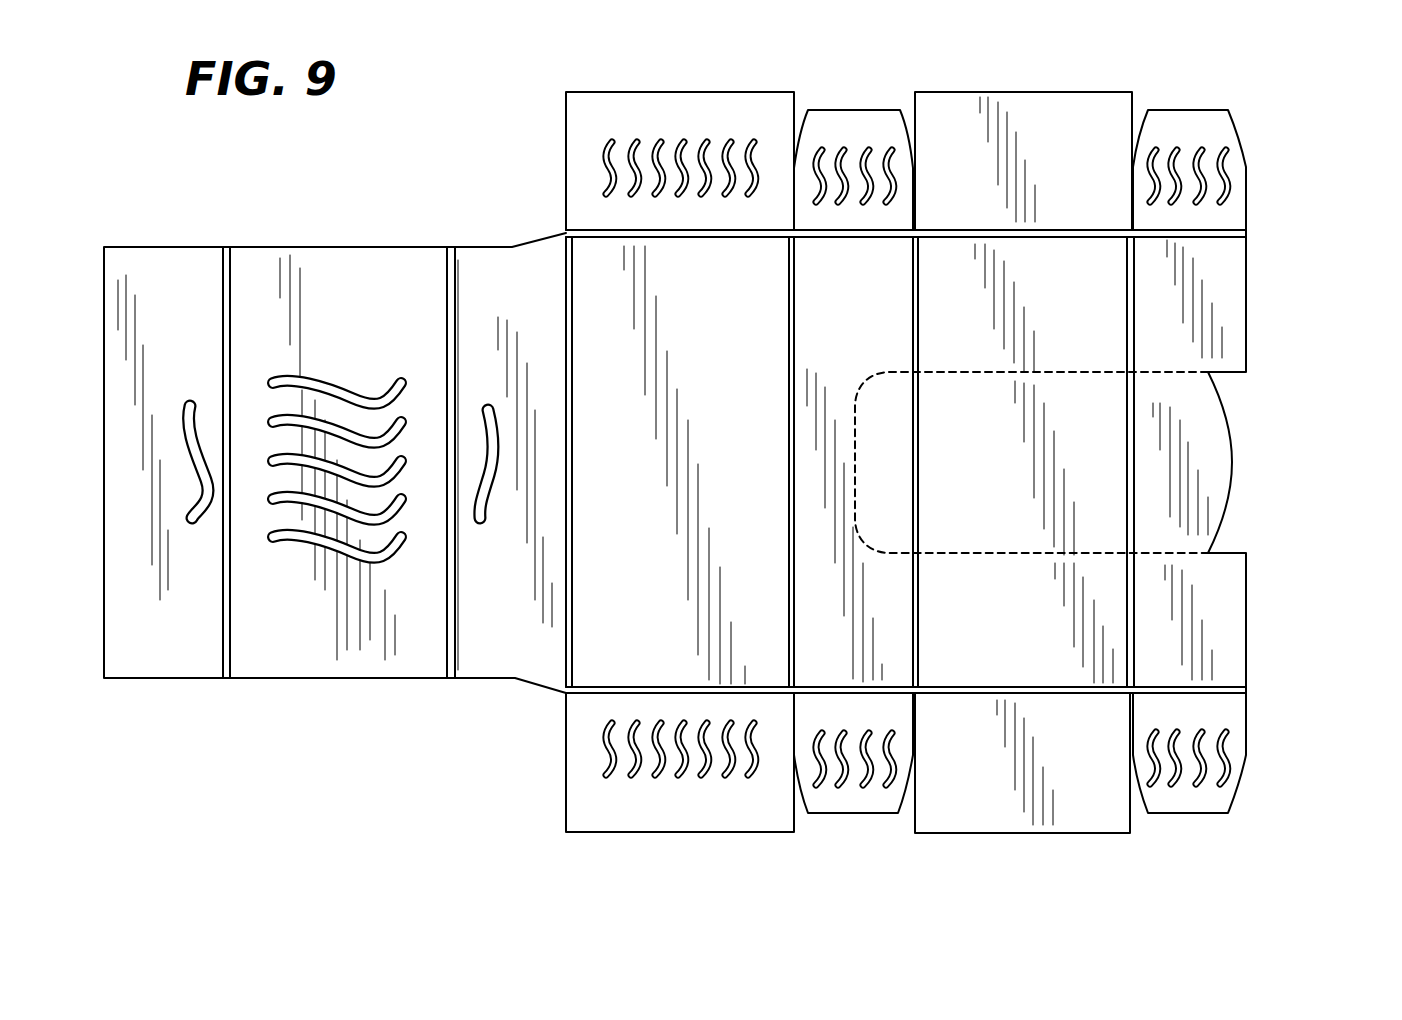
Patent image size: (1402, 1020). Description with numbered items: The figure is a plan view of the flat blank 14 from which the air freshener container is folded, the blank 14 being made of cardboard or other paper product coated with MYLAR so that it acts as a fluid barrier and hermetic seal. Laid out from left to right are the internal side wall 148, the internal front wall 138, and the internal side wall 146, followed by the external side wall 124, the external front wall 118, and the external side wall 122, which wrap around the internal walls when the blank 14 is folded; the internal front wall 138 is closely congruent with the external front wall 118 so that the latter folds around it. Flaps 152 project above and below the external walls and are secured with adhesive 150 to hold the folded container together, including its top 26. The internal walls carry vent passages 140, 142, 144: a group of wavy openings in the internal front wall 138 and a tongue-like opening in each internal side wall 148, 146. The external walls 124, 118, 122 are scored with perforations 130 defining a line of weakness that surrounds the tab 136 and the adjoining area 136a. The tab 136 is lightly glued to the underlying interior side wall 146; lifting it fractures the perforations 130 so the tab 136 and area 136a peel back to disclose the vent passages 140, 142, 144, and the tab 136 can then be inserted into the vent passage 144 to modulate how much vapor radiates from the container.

The blank 14 is at (576, 76).
The top 26 is at (602, 653).
The external front wall 118 is at (1085, 331).
The external side wall 122 is at (1228, 302).
The external side wall 124 is at (850, 280).
The perforations 130 is at (966, 372).
The tab 136 is at (1230, 450).
The tab area 136a is at (1087, 492).
The internal front wall 138 is at (332, 267).
The vent passage 140 is at (318, 542).
The vent passage 142 is at (192, 525).
The vent passage 144 is at (487, 405).
The internal side wall 146 is at (483, 663).
The internal side wall 148 is at (148, 267).
The adhesive 150 is at (722, 150).
The flaps 152 is at (653, 113).